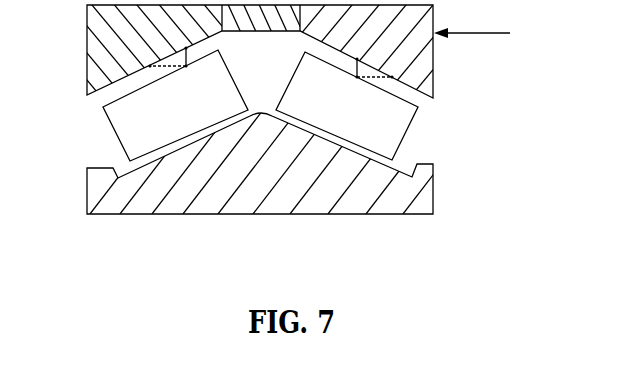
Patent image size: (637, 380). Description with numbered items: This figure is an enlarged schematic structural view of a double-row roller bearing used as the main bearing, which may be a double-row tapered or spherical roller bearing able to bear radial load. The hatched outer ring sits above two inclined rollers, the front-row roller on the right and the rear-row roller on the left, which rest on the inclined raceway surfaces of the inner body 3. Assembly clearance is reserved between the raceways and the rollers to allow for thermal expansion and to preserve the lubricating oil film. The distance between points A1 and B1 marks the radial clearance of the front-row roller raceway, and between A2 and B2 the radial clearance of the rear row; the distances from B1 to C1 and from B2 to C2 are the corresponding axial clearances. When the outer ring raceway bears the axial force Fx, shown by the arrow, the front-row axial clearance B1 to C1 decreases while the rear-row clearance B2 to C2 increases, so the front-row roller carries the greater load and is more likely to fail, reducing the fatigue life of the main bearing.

The base body with inclined ramp surfaces 3 is at (310, 176).
The front-row raceway point A1 is at (343, 61).
The front-row roller point B1 is at (361, 85).
The front-row raceway point C1 is at (406, 77).
The rear-row raceway point A2 is at (202, 49).
The rear-row roller point B2 is at (184, 74).
The rear-row raceway point C2 is at (137, 62).
The axial force Fx is at (472, 48).